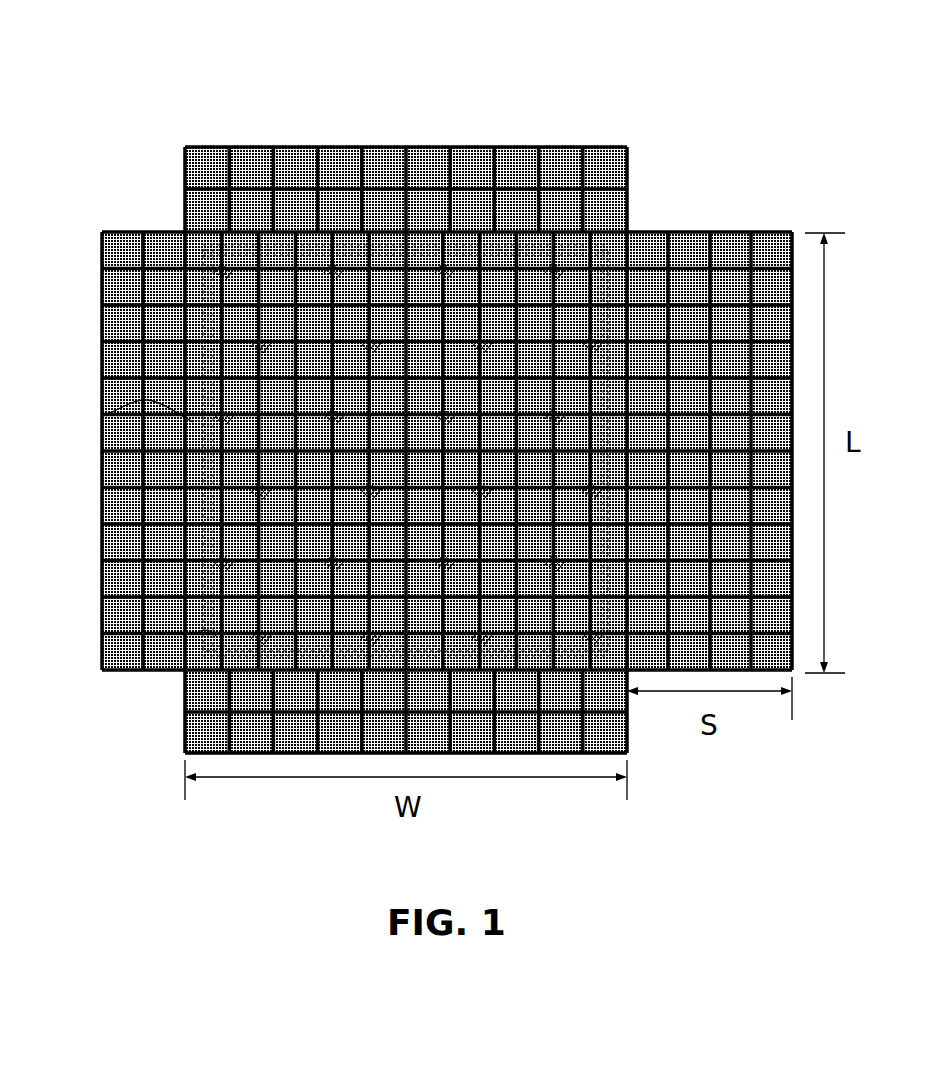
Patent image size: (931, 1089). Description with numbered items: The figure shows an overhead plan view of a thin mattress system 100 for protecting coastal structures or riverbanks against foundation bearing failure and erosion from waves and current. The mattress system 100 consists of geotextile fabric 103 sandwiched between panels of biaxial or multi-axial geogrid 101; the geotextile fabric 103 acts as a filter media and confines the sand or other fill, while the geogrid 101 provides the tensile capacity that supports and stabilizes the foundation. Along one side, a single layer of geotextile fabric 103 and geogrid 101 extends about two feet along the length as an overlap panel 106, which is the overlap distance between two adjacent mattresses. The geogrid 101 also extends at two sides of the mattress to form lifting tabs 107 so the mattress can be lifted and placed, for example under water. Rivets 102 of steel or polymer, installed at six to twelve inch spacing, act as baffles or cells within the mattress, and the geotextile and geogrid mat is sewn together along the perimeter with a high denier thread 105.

The thin mattress system 100 is at (417, 414).
The geogrid 101 is at (592, 253).
The rivets 102 is at (203, 635).
The geotextile fabric 103 is at (227, 270).
The thread 105 is at (102, 415).
The overlap panel 106 is at (693, 252).
The lifting tabs 107 is at (245, 146).